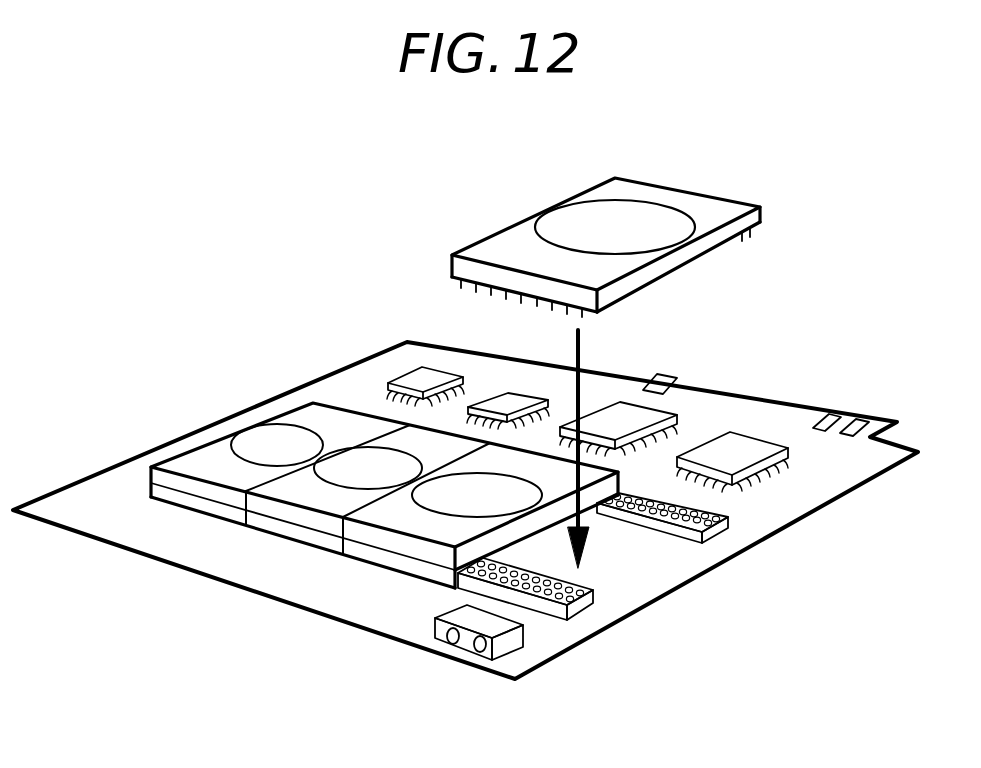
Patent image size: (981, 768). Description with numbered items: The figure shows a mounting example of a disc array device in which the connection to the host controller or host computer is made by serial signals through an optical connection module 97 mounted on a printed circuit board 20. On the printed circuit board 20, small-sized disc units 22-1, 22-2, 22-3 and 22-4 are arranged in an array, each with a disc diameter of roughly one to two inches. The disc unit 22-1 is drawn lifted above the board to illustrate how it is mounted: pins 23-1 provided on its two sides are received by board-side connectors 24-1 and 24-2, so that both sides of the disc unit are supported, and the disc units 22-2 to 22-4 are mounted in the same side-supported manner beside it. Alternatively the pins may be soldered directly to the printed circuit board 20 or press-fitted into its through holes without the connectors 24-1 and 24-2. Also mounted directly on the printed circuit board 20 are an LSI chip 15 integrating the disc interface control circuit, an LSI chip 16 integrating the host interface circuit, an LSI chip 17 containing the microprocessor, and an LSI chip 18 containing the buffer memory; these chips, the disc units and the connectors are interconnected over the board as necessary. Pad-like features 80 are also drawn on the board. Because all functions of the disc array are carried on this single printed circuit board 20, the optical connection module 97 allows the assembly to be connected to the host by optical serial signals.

The printed circuit board 20 is at (207, 428).
The board contact pads 80 is at (780, 393).
The small-sized disc unit 22-1 is at (638, 212).
The small-sized disc unit 22-2 is at (398, 548).
The small-sized disc unit 22-3 is at (293, 515).
The small-sized disc unit 22-4 is at (202, 492).
The pins 23-1 is at (592, 316).
The board-side connector 24-1 is at (582, 607).
The board-side connector 24-2 is at (723, 530).
The LSI chip 15 is at (437, 378).
The LSI chip 16 is at (515, 398).
The LSI chip 17 is at (608, 422).
The LSI chip 18 is at (707, 458).
The optical connection module 97 is at (490, 652).